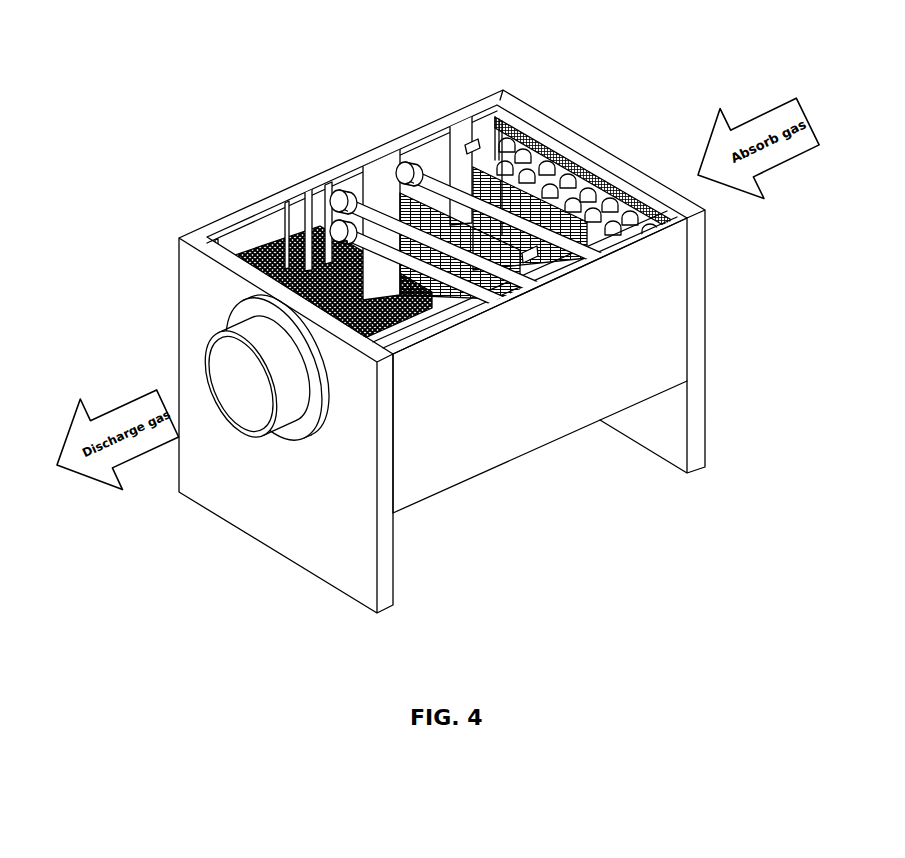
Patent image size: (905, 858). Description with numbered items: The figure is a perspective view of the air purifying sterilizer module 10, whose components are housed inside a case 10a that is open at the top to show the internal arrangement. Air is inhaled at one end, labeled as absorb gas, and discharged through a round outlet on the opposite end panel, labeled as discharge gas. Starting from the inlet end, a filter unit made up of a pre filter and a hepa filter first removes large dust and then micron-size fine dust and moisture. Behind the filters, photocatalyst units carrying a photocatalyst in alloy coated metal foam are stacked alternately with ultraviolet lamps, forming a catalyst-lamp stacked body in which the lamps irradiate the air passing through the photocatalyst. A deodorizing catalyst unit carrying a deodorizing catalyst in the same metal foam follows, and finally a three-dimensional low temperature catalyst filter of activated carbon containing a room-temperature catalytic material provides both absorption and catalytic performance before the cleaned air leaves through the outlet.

The air purifying sterilizer module 10 is at (170, 42).
The case 10a is at (523, 421).